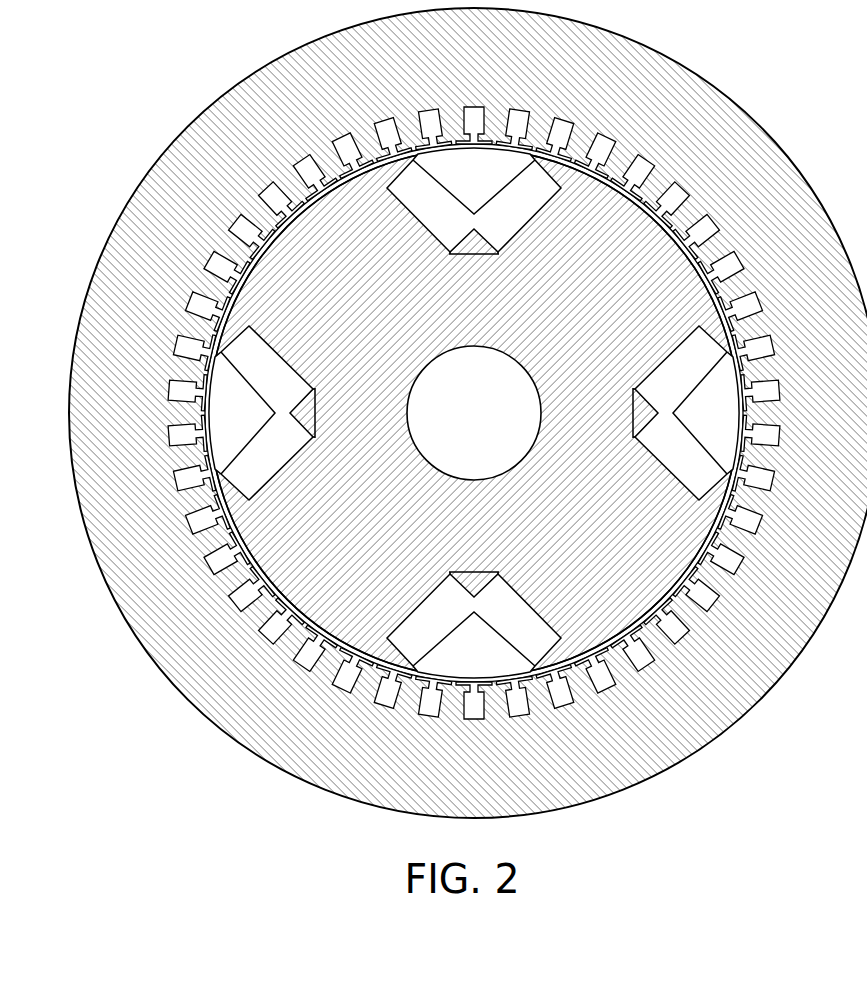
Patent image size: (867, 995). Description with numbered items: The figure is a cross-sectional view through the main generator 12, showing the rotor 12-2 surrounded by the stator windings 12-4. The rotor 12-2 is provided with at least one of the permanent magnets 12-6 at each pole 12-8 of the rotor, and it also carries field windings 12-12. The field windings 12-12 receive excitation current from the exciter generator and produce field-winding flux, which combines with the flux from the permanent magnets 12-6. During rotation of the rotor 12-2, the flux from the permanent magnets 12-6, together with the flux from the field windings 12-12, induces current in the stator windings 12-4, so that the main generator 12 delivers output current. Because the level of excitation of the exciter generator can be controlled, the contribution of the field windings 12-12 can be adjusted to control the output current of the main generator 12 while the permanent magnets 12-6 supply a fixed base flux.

The main generator 12 is at (443, 413).
The rotor 12-2 is at (364, 206).
The stator windings 12-4 is at (700, 95).
The permanent magnets 12-6 is at (304, 245).
The pole 12-8 is at (336, 309).
The field windings 12-12 is at (521, 183).